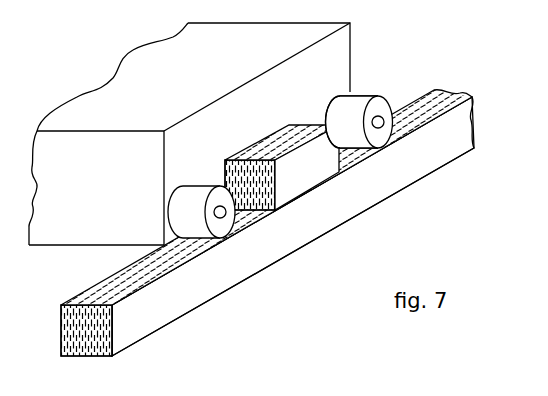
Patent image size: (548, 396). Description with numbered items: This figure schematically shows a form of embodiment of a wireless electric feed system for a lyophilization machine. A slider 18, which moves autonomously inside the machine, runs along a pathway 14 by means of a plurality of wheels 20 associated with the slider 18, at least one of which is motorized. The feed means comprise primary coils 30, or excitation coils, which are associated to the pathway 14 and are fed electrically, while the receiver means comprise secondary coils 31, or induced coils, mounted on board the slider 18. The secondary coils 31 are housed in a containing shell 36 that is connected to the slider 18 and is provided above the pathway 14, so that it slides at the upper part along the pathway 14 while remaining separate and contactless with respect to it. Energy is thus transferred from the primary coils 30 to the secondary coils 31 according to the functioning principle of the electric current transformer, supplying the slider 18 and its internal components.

The pathway 14 is at (292, 204).
The slider 18 is at (87, 113).
The wheels 20 is at (354, 112).
The primary coils 30 is at (438, 105).
The secondary coils 31 is at (296, 178).
The containing shell 36 is at (301, 180).